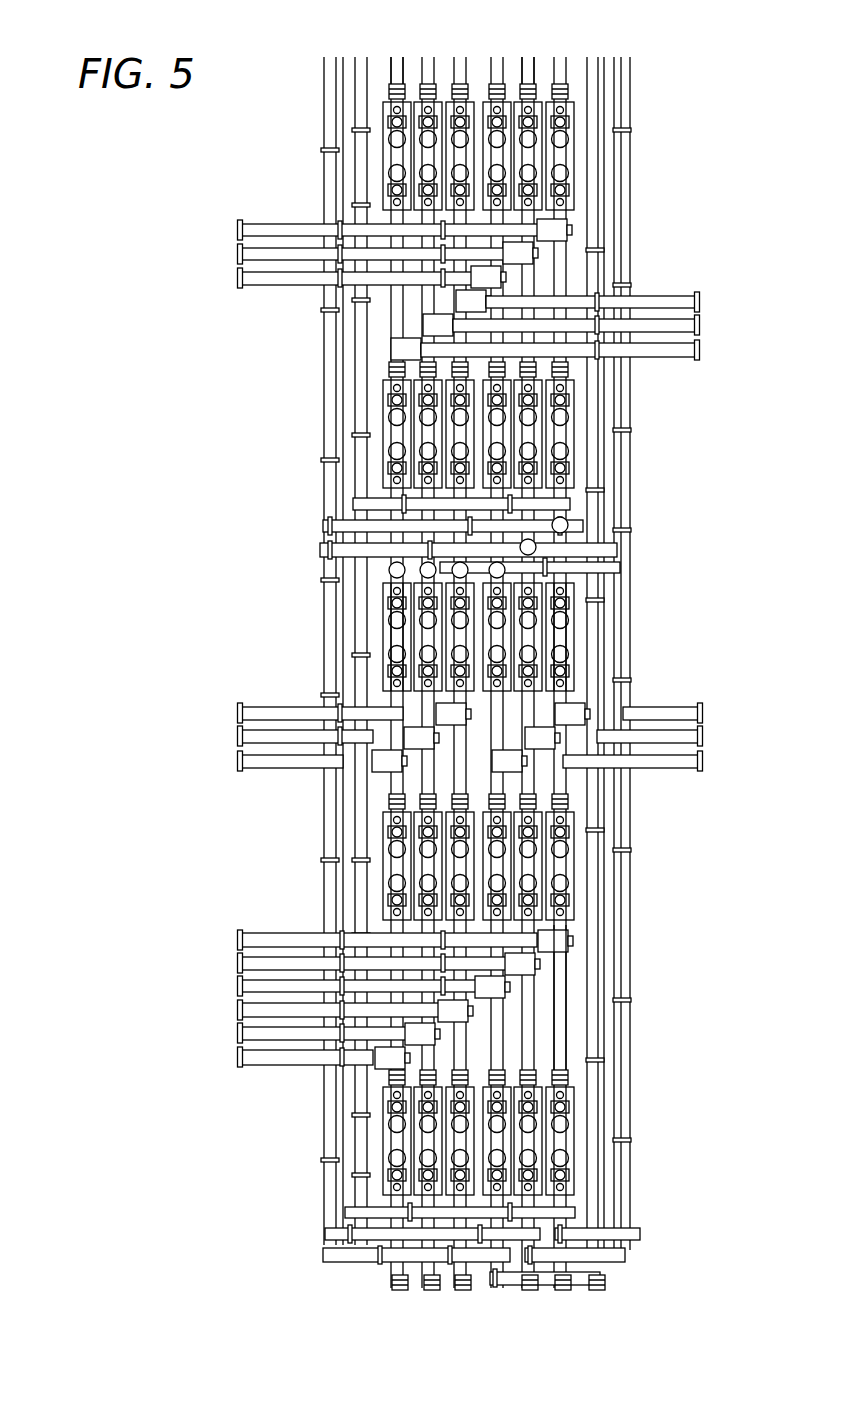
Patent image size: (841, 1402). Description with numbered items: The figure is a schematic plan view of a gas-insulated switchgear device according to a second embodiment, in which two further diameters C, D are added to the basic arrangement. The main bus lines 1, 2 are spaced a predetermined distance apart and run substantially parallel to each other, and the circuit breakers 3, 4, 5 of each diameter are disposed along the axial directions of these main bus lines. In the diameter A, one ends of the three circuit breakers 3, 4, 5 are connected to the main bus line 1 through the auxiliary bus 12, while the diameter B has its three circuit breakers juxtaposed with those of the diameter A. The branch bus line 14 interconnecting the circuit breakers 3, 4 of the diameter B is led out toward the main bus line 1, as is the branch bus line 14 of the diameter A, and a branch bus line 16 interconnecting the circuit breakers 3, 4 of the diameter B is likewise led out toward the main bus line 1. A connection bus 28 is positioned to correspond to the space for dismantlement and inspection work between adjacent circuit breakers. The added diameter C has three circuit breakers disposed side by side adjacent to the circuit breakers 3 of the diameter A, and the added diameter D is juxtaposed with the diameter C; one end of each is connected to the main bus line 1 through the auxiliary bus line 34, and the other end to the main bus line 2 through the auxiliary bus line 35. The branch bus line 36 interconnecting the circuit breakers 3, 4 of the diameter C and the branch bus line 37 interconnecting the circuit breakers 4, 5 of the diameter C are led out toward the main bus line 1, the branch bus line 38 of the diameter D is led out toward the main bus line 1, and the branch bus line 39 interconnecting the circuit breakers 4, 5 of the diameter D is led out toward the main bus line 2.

The main bus line 1 is at (330, 110).
The main bus line 2 is at (617, 165).
The circuit breaker 3 is at (385, 405).
The circuit breaker 4 is at (385, 160).
The circuit breaker 5 is at (385, 652).
The auxiliary bus 12 is at (378, 562).
The branch bus line 14 is at (668, 295).
The branch bus line 16 is at (270, 222).
The connection bus 28 is at (565, 1048).
The auxiliary bus line 34 is at (357, 1265).
The auxiliary bus line 35 is at (580, 578).
The branch bus line 36 is at (280, 1070).
The branch bus line 37 is at (268, 705).
The branch bus line 38 is at (270, 930).
The branch bus line 39 is at (695, 775).
The diameter A is at (385, 62).
The diameter B is at (538, 64).
The diameter C is at (385, 623).
The diameter D is at (570, 650).